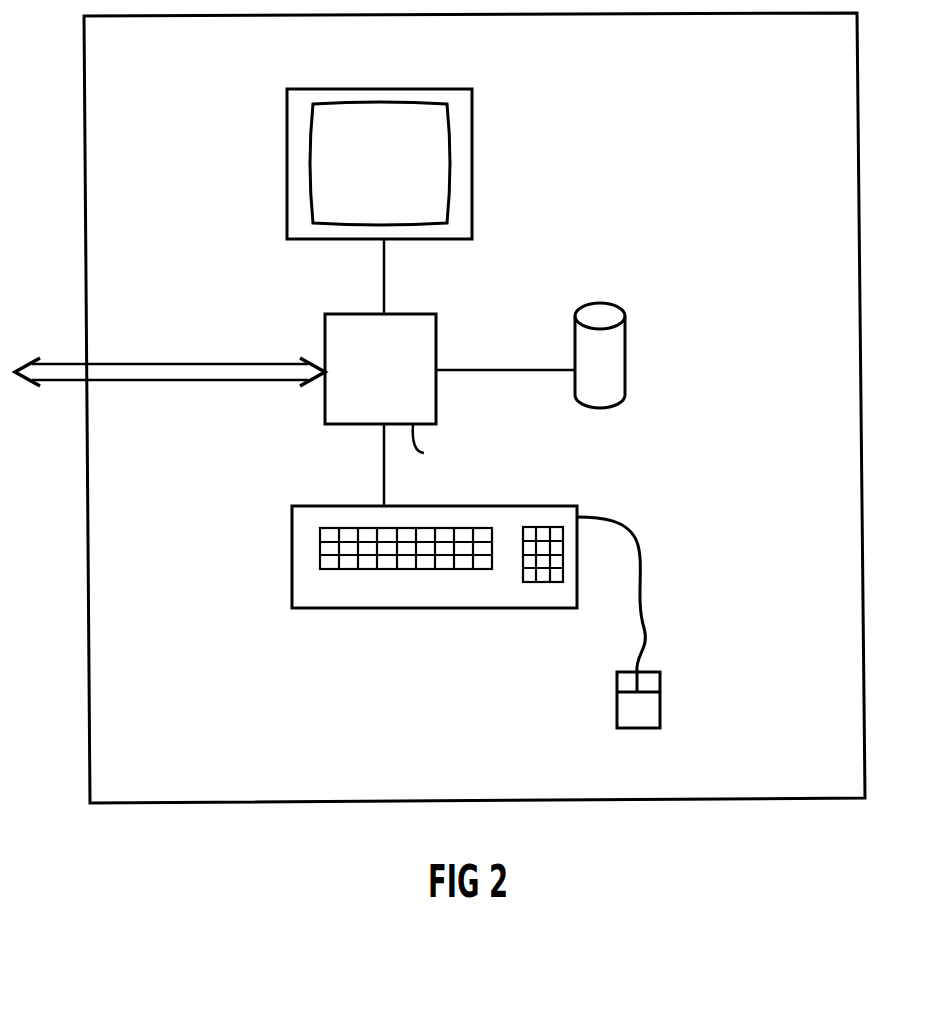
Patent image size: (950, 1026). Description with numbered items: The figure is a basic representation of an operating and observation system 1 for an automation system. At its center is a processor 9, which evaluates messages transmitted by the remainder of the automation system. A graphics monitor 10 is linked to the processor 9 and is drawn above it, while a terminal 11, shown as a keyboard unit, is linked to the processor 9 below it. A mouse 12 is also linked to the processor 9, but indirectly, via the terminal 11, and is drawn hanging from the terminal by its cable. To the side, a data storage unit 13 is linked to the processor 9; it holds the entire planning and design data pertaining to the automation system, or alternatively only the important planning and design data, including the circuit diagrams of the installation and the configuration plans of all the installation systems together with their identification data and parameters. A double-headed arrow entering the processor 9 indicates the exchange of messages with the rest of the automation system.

The operating and observation system 1 is at (860, 317).
The processor 9 is at (325, 332).
The graphics monitor 10 is at (472, 170).
The terminal 11 is at (292, 577).
The mouse 12 is at (660, 702).
The data storage unit 13 is at (625, 358).